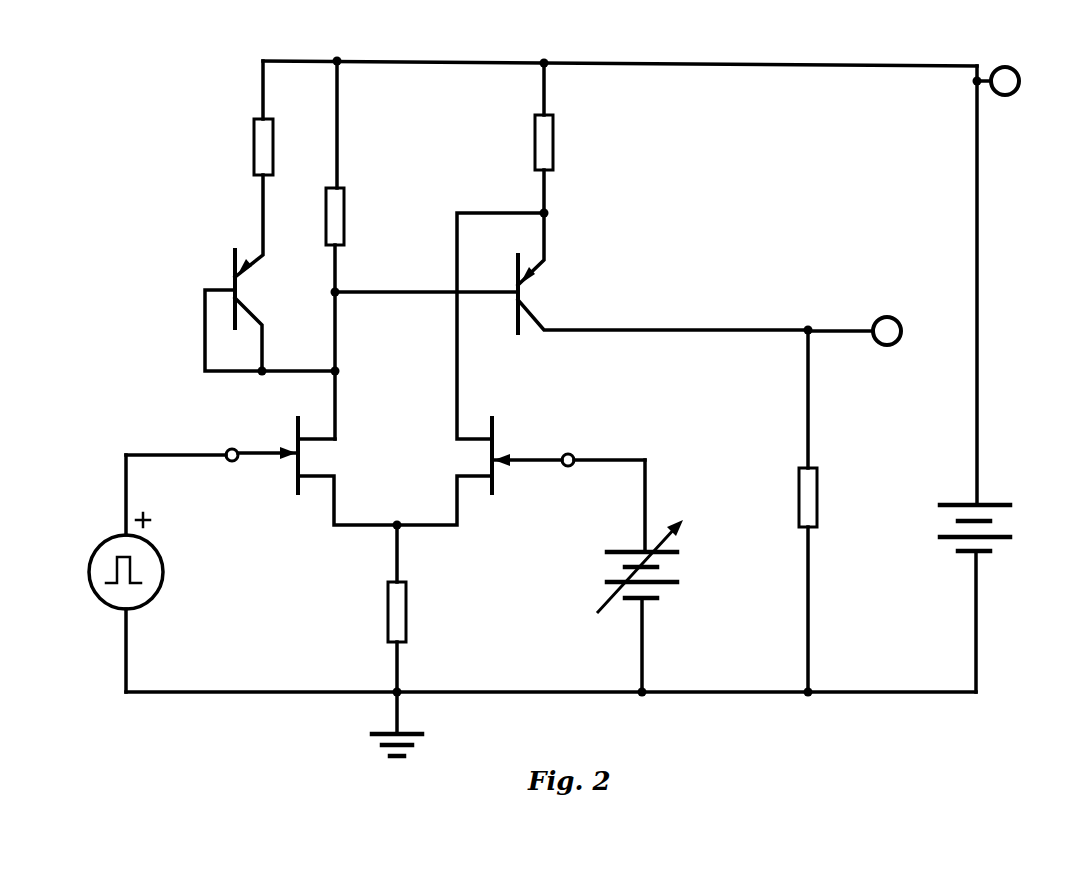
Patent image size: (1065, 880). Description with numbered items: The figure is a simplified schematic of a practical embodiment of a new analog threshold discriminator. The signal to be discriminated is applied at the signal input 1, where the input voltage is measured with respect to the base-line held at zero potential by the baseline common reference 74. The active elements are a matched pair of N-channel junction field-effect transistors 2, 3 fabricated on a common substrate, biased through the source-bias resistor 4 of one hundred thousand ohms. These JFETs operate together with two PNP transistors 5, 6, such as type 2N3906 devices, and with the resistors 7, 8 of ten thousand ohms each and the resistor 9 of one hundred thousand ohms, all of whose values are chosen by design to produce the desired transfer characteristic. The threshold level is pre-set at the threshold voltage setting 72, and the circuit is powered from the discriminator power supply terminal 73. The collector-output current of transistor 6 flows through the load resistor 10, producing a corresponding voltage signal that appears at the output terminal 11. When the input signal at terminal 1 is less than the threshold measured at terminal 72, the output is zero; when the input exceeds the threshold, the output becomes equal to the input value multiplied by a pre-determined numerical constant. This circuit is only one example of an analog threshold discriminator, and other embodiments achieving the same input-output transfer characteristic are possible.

The signal input 1 is at (223, 440).
The junction field-effect transistor 2 is at (278, 479).
The junction field-effect transistor 3 is at (568, 465).
The source-bias resistor 4 is at (412, 612).
The PNP transistor 5 is at (224, 289).
The PNP transistor 6 is at (546, 294).
The resistor 7 is at (251, 147).
The resistor 8 is at (557, 142).
The resistor 9 is at (348, 216).
The load resistor 10 is at (827, 485).
The output terminal 11 is at (860, 313).
The threshold voltage setting 72 is at (570, 442).
The discriminator power supply terminal 73 is at (1010, 105).
The baseline common reference 74 is at (375, 731).